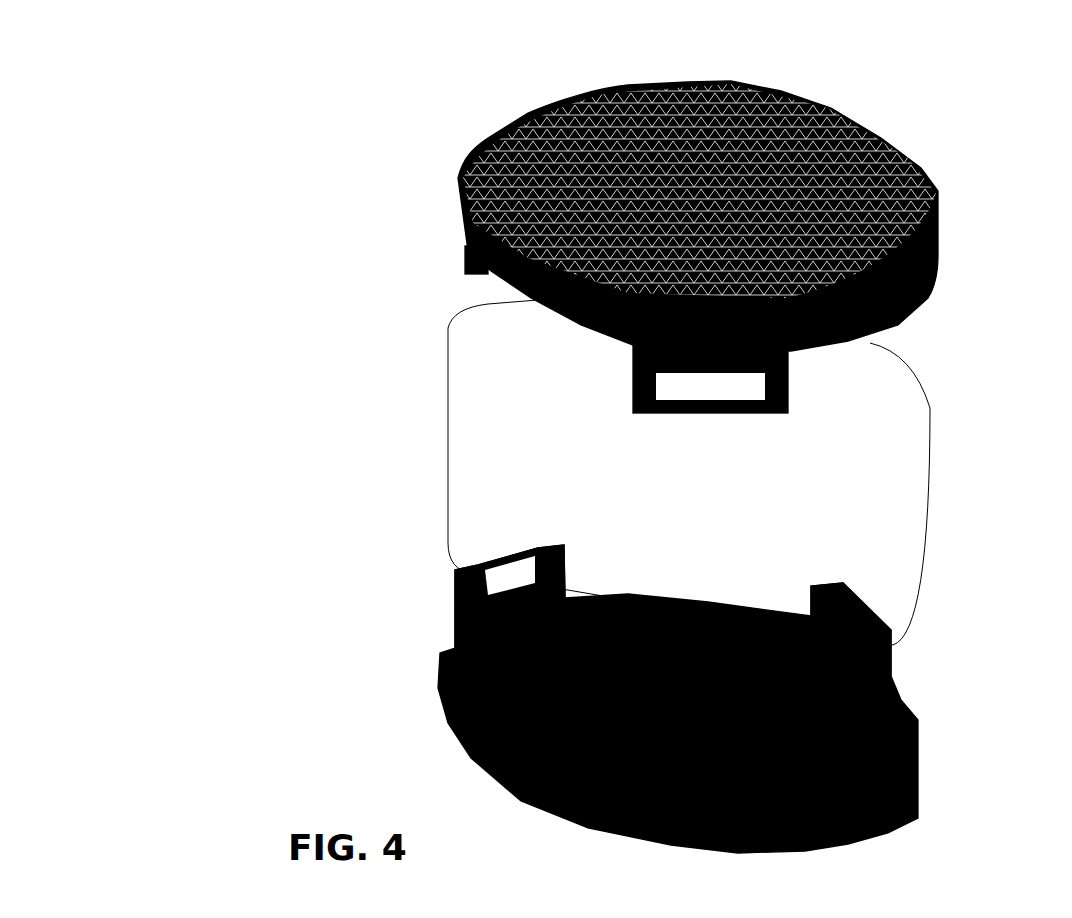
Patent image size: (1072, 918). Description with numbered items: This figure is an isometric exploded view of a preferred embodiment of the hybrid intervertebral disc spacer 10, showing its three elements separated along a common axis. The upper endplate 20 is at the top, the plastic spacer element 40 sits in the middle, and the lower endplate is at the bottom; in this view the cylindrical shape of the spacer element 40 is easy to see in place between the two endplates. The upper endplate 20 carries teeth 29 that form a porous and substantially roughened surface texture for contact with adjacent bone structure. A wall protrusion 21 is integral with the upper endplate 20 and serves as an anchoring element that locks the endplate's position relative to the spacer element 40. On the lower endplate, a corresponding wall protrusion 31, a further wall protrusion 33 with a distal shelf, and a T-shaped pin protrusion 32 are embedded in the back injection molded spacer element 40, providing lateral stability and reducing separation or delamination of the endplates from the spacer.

The disc spacer 10 is at (287, 105).
The upper endplate 20 is at (455, 165).
The teeth 29 is at (548, 117).
The wall protrusion 21 is at (762, 378).
The spacer element 40 is at (472, 452).
The wall protrusion 31 is at (452, 617).
The wall protrusion 33 is at (882, 653).
The pin protrusion 32 is at (875, 706).